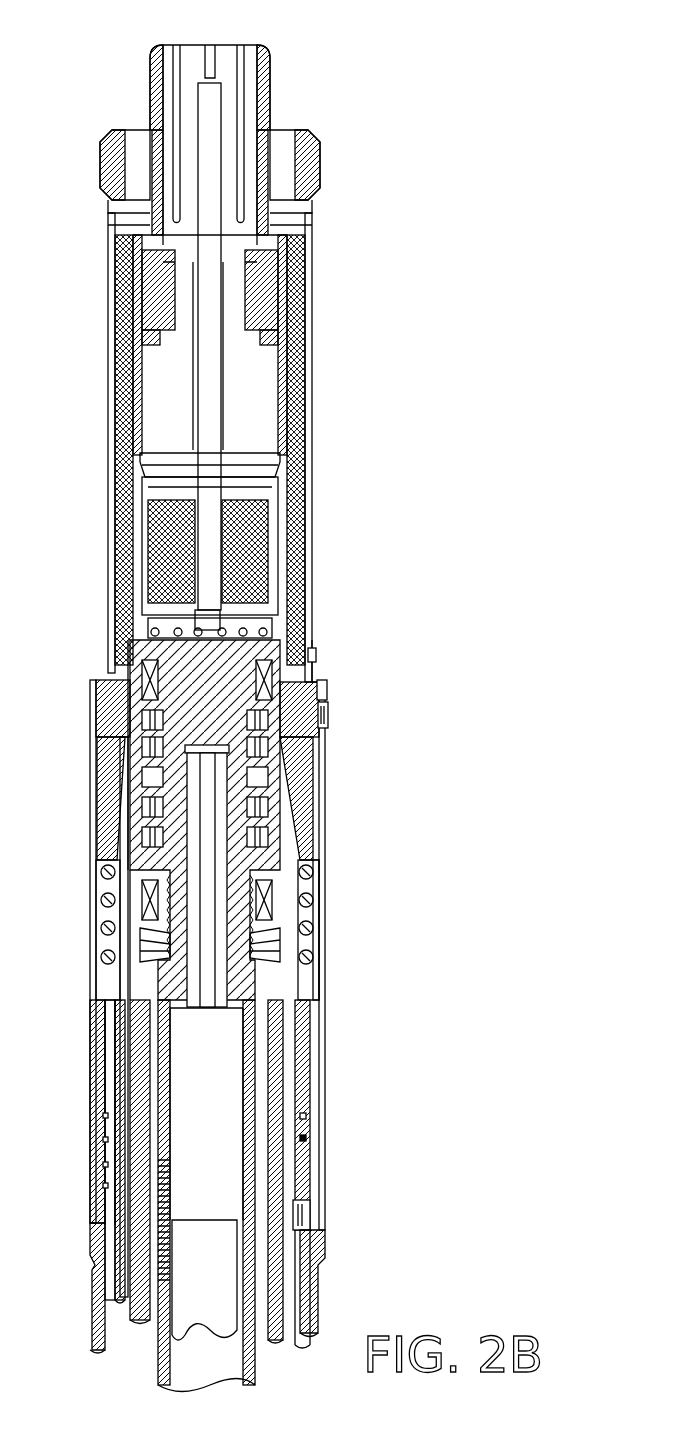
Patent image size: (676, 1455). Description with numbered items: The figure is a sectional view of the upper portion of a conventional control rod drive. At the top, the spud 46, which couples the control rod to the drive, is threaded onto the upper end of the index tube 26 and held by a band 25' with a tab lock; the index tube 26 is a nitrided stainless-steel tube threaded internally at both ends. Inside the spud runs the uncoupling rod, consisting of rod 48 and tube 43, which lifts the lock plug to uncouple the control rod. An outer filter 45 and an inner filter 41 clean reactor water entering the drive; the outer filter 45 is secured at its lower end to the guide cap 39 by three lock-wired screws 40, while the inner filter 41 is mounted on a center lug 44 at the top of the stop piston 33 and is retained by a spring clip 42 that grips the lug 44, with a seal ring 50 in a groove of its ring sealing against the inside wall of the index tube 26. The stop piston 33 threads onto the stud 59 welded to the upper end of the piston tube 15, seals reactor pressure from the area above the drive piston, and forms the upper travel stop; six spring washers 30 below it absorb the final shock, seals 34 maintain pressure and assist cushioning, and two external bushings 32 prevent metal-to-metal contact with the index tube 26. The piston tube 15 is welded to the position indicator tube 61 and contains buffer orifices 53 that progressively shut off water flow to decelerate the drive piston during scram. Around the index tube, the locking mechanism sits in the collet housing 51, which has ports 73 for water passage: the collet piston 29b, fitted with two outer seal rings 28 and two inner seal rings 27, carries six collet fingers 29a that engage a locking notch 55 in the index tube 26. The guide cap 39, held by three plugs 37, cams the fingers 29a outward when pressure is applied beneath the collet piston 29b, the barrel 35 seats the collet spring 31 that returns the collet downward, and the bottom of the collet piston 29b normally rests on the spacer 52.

The rod 48 is at (203, 95).
The spud 46 is at (88, 72).
The outer filter 45 is at (318, 136).
The band 25' is at (245, 447).
The tube 43 is at (190, 413).
The seal ring 50 is at (268, 463).
The inner filter 41 is at (270, 522).
The spring clip 42 is at (150, 630).
The center lug 44 is at (212, 622).
The lock-wired screws 40 is at (318, 648).
The guide cap 39 is at (318, 685).
The plugs 37 is at (328, 712).
The external bushings 32 is at (150, 668).
The seals 34 is at (150, 745).
The collet fingers 29a is at (97, 786).
The barrel 35 is at (323, 795).
The stop piston 33 is at (262, 870).
The collet spring 31 is at (100, 900).
The index tube 26 is at (278, 913).
The spring washers 30 is at (145, 950).
The ports 73 is at (320, 995).
The collet housing 51 is at (318, 1048).
The collet piston 29b is at (302, 1083).
The outer piston seal rings 28 is at (306, 1138).
The inner piston seal rings 27 is at (105, 1158).
The locking notch 55 is at (302, 1172).
The spacer 52 is at (308, 1225).
The piston tube 15 is at (163, 1095).
The stud 59 is at (175, 1010).
The buffer orifices 53 is at (170, 1185).
The position indicator tube 61 is at (215, 1297).